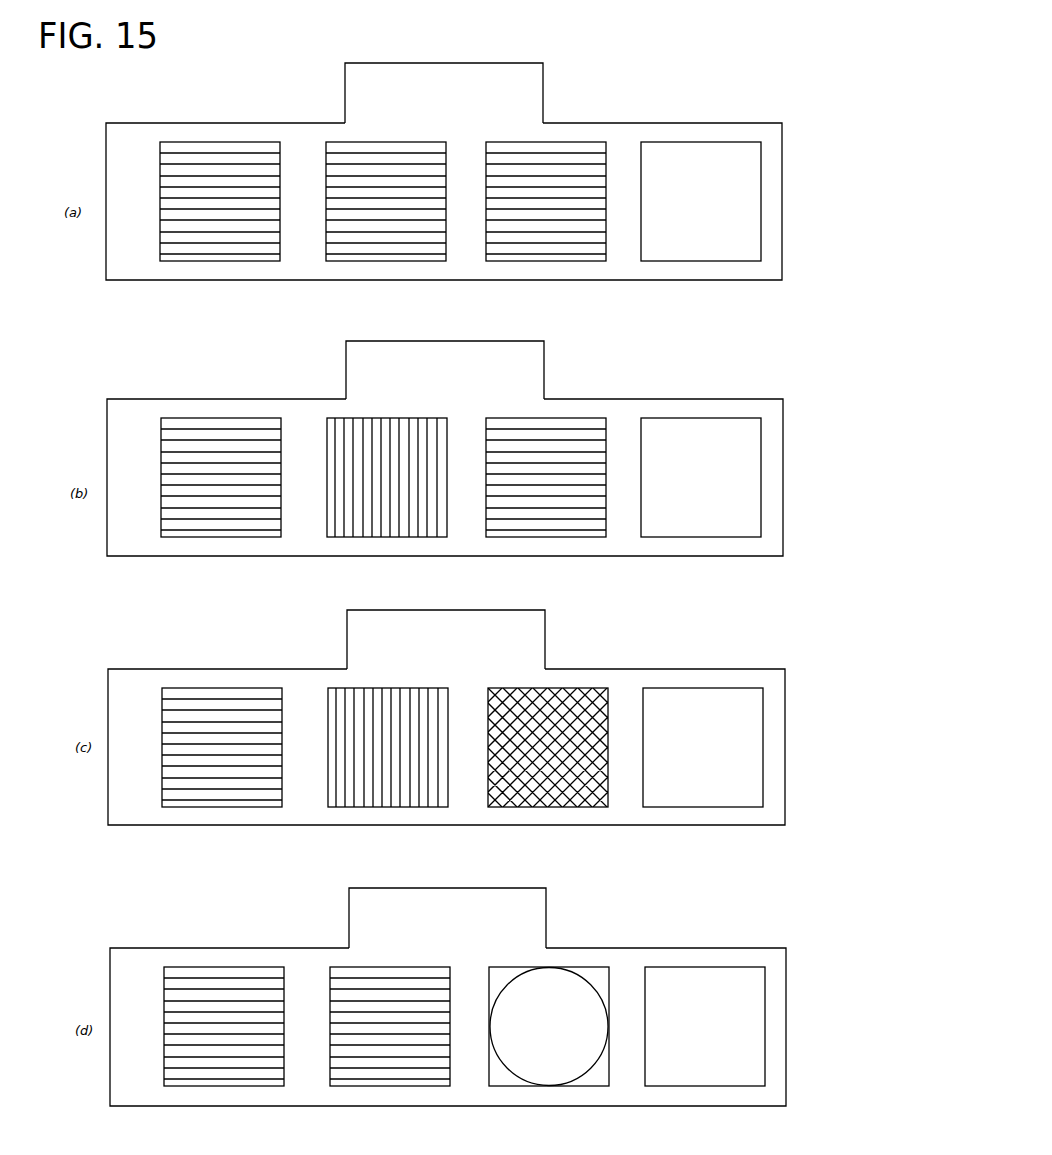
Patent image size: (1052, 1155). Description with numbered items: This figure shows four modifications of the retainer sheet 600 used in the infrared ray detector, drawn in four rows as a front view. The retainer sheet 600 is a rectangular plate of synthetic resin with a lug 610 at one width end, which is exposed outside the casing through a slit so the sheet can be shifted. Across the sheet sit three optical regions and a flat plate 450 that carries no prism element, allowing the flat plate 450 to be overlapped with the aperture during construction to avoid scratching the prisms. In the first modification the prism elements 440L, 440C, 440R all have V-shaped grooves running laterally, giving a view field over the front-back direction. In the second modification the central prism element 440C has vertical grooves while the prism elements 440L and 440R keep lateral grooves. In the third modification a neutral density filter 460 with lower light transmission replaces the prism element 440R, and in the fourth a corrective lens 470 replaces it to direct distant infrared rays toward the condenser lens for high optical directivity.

The prism element 440L is at (227, 157).
The prism element 440C is at (362, 149).
The prism element 440R is at (583, 144).
The flat plate 450 is at (748, 208).
The neutral density filter 460 is at (568, 687).
The corrective lens 470 is at (555, 973).
The retainer sheet 600 is at (745, 132).
The lug 610 is at (526, 89).